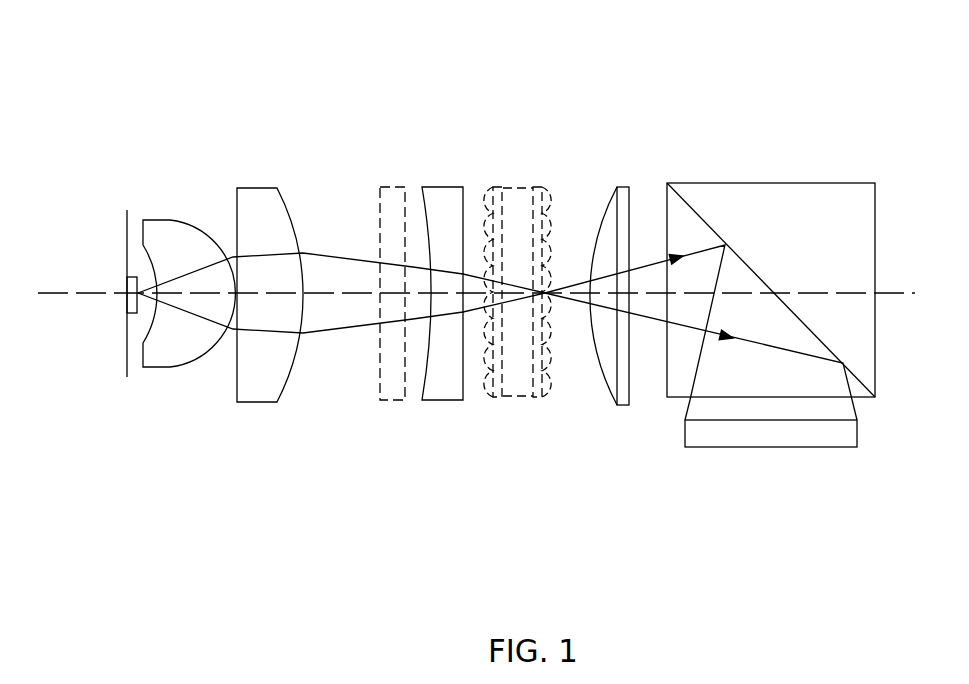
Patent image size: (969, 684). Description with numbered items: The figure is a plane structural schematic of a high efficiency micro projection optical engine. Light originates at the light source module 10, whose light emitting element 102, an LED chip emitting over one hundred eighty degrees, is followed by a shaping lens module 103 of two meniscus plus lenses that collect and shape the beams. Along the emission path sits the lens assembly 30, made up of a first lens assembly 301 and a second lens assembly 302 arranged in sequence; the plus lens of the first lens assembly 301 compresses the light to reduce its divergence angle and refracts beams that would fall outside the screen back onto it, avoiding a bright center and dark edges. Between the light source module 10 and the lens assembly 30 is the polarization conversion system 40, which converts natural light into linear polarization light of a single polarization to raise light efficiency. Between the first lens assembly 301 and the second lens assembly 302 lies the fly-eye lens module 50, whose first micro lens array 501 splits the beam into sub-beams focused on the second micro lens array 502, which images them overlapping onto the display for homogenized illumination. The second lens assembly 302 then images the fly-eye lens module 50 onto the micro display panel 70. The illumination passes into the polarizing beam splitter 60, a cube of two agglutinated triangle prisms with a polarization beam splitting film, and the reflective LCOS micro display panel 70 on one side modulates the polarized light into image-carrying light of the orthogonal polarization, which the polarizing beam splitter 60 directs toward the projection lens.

The light source module 10 is at (228, 122).
The light emitting element 102 is at (128, 273).
The shaping lens module 103 is at (265, 178).
The lens assembly 30 is at (685, 72).
The first lens assembly 301 is at (455, 187).
The second lens assembly 302 is at (617, 187).
The polarization conversion system 40 is at (392, 403).
The fly-eye lens module 50 is at (543, 482).
The first micro lens array 501 is at (495, 402).
The second micro lens array 502 is at (545, 353).
The polarizing beam splitter 60 is at (798, 183).
The micro display panel 70 is at (797, 447).